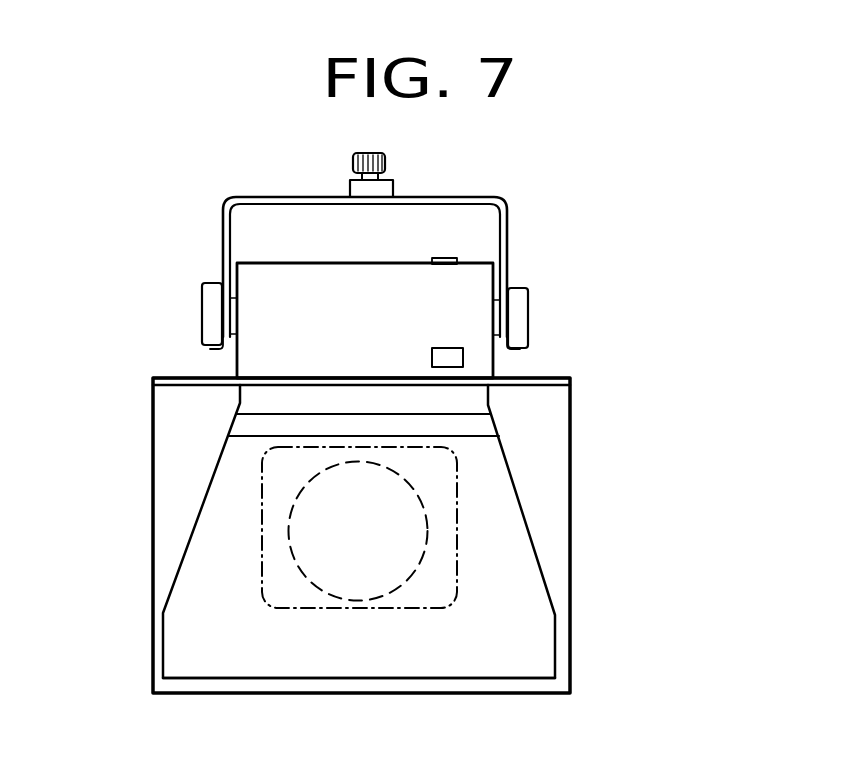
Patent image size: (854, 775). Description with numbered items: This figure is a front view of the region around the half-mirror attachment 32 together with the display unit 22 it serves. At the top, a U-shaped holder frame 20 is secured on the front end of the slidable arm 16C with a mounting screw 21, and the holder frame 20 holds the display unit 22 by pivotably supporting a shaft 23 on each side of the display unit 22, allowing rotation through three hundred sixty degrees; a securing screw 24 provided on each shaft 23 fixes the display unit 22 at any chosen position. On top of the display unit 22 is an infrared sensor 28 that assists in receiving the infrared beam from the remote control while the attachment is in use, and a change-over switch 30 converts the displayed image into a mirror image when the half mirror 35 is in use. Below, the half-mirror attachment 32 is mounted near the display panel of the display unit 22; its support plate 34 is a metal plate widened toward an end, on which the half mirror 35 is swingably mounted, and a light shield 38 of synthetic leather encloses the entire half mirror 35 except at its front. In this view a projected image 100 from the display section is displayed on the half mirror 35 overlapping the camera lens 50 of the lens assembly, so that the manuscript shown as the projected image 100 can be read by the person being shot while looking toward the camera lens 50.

The slidable arm 16C is at (393, 191).
The holder frame 20 is at (508, 230).
The mounting screw 21 is at (353, 163).
The display unit 22 is at (290, 263).
The shaft 23 is at (230, 340).
The securing screw 24 is at (202, 303).
The infrared sensor 28 is at (446, 348).
The change-over switch 30 is at (444, 258).
The half-mirror attachment 32 is at (588, 568).
The support plate 34 is at (545, 386).
The half mirror 35 is at (170, 630).
The light shield 38 is at (152, 478).
The camera lens 50 is at (371, 601).
The projected image 100 is at (455, 608).